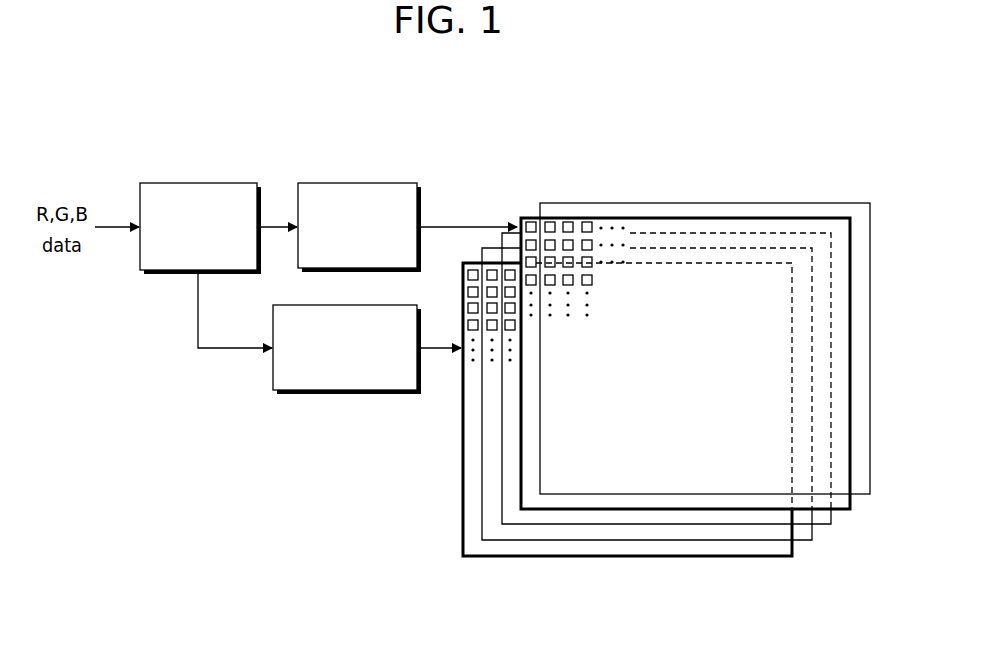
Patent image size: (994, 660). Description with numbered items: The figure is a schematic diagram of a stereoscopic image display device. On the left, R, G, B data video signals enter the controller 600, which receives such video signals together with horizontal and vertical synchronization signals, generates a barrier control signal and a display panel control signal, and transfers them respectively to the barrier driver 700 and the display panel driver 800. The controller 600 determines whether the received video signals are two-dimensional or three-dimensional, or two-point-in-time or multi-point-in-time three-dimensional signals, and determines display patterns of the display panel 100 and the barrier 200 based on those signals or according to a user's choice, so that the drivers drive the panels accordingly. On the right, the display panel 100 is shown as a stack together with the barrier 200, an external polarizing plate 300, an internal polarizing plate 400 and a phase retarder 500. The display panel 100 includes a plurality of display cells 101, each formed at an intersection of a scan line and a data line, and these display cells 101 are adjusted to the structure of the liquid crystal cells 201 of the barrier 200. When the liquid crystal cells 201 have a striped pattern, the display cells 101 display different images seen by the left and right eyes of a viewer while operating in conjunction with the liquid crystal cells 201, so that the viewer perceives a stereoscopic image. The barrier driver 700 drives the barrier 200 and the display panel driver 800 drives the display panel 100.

The display panel 100 is at (605, 447).
The display cell 101 is at (476, 334).
The barrier 200 is at (658, 323).
The liquid crystal cell 201 is at (523, 229).
The external polarizing plate 300 is at (716, 203).
The internal polarizing plate 400 is at (742, 528).
The phase retarder 500 is at (655, 542).
The controller 600 is at (218, 183).
The barrier driver 700 is at (373, 183).
The display panel driver 800 is at (345, 394).